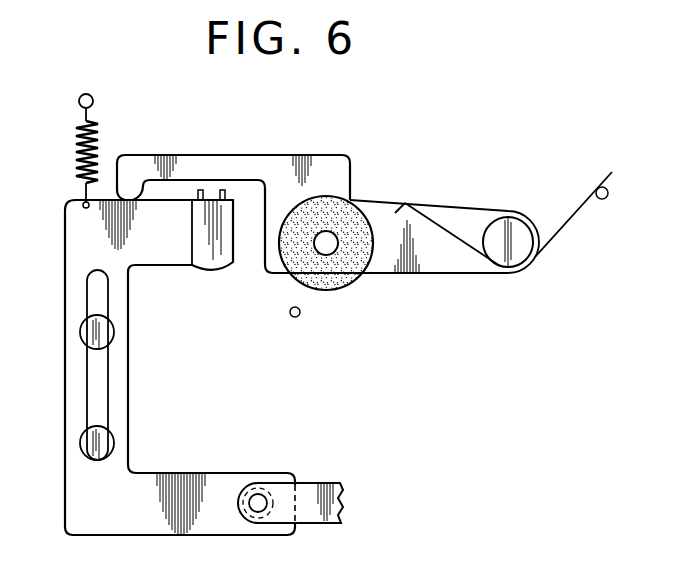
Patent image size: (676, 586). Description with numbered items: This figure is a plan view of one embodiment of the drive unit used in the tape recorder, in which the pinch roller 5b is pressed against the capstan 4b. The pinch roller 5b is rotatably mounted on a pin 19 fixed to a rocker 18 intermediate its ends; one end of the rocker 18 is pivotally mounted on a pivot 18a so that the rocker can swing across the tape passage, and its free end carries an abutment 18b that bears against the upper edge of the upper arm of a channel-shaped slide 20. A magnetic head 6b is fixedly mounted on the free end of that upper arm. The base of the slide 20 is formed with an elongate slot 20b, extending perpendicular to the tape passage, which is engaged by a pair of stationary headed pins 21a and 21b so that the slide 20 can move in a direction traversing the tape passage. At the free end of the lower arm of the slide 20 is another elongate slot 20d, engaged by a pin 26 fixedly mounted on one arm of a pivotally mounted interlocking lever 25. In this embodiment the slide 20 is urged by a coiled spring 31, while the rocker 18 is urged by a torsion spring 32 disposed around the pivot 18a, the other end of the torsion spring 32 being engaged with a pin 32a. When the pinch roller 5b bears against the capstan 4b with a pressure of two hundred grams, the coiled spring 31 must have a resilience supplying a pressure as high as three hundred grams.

The capstan 4b is at (300, 312).
The pinch roller 5b is at (355, 258).
The magnetic head 6b is at (226, 262).
The rocker 18 is at (327, 176).
The pivot 18a is at (522, 252).
The abutment 18b is at (128, 178).
The pin 19 is at (331, 239).
The slide 20 is at (72, 420).
The elongate slot 20b is at (100, 372).
The elongate slot 20d is at (274, 516).
The stationary headed pin 21a is at (107, 330).
The stationary headed pin 21b is at (108, 441).
The interlocking lever 25 is at (305, 492).
The pin 26 is at (258, 494).
The coiled spring 31 is at (76, 154).
The torsion spring 32 is at (450, 231).
The pin 32a is at (606, 199).